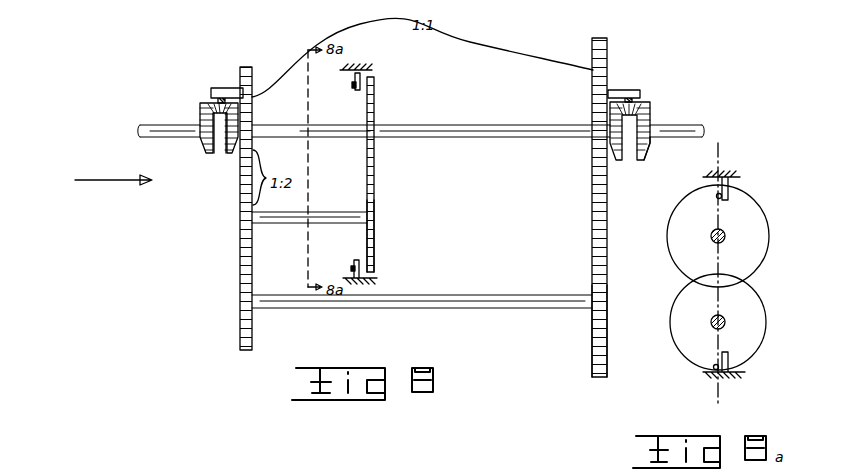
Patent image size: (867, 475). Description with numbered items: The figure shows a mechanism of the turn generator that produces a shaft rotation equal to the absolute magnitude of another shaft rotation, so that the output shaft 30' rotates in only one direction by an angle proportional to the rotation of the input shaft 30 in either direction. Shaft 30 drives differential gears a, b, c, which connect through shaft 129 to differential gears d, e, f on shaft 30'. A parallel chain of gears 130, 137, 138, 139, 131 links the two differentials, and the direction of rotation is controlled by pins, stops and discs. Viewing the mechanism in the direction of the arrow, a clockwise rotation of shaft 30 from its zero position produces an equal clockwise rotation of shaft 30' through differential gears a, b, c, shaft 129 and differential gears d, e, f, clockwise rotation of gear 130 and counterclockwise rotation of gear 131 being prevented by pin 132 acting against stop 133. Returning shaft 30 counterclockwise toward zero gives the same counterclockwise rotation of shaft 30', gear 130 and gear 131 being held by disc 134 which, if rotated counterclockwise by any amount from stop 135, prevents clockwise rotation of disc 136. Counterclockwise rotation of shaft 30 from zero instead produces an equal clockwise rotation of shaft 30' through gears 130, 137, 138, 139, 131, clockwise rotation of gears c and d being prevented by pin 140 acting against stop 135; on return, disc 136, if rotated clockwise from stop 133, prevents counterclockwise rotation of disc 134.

In FIG. 8, the shaft 30 is at (169, 118).
In FIG. 8, the shaft 30' is at (677, 117).
In FIG. 8, the shaft 129 is at (514, 125).
In FIG. 8, the gear 130 is at (246, 66).
In FIG. 8, the gear 131 is at (592, 48).
In FIG. 8, the pin 132 is at (352, 268).
In FIG. 8a, the pin 132 is at (712, 366).
In FIG. 8, the stop 133 is at (356, 260).
In FIG. 8a, the stop 133 is at (736, 365).
In FIG. 8, the disc 134 is at (376, 112).
In FIG. 8a, the disc 134 is at (762, 222).
In FIG. 8, the stop 135 is at (351, 91).
In FIG. 8a, the stop 135 is at (732, 190).
In FIG. 8, the disc 136 is at (376, 227).
In FIG. 8a, the disc 136 is at (762, 304).
In FIG. 8, the gear 137 is at (240, 222).
In FIG. 8, the gear 138 is at (240, 308).
In FIG. 8, the gear 139 is at (608, 290).
In FIG. 8, the pin 140 is at (354, 86).
In FIG. 8a, the pin 140 is at (716, 196).
In FIG. 8, the differential gear a is at (205, 152).
In FIG. 8, the differential gear b is at (212, 93).
In FIG. 8, the differential gear c is at (228, 152).
In FIG. 8, the differential gear d is at (620, 160).
In FIG. 8, the differential gear e is at (640, 96).
In FIG. 8, the differential gear f is at (650, 148).